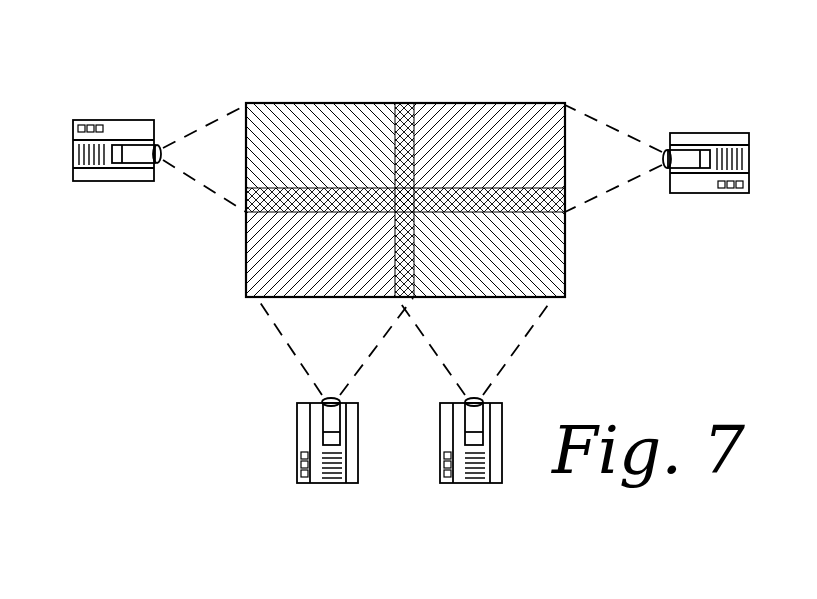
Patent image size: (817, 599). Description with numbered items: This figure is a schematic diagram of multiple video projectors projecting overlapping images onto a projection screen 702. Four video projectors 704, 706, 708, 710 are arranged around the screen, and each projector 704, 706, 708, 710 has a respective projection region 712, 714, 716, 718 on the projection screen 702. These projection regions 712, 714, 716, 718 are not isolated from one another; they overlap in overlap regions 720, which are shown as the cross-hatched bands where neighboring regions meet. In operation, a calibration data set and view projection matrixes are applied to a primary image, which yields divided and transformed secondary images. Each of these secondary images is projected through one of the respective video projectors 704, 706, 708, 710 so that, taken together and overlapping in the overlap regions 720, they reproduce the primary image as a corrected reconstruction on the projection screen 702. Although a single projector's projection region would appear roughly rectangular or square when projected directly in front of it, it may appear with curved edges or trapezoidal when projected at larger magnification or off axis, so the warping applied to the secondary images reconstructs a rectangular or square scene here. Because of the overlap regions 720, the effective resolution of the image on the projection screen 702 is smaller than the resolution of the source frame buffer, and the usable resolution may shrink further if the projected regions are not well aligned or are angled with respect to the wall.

The projection screen 702 is at (537, 103).
The video projector 704 is at (110, 118).
The video projector 706 is at (700, 133).
The video projector 708 is at (297, 440).
The video projector 710 is at (500, 443).
The projection region 712 is at (318, 138).
The projection region 714 is at (497, 135).
The projection region 716 is at (272, 278).
The projection region 718 is at (518, 270).
The overlap regions 720 is at (498, 198).